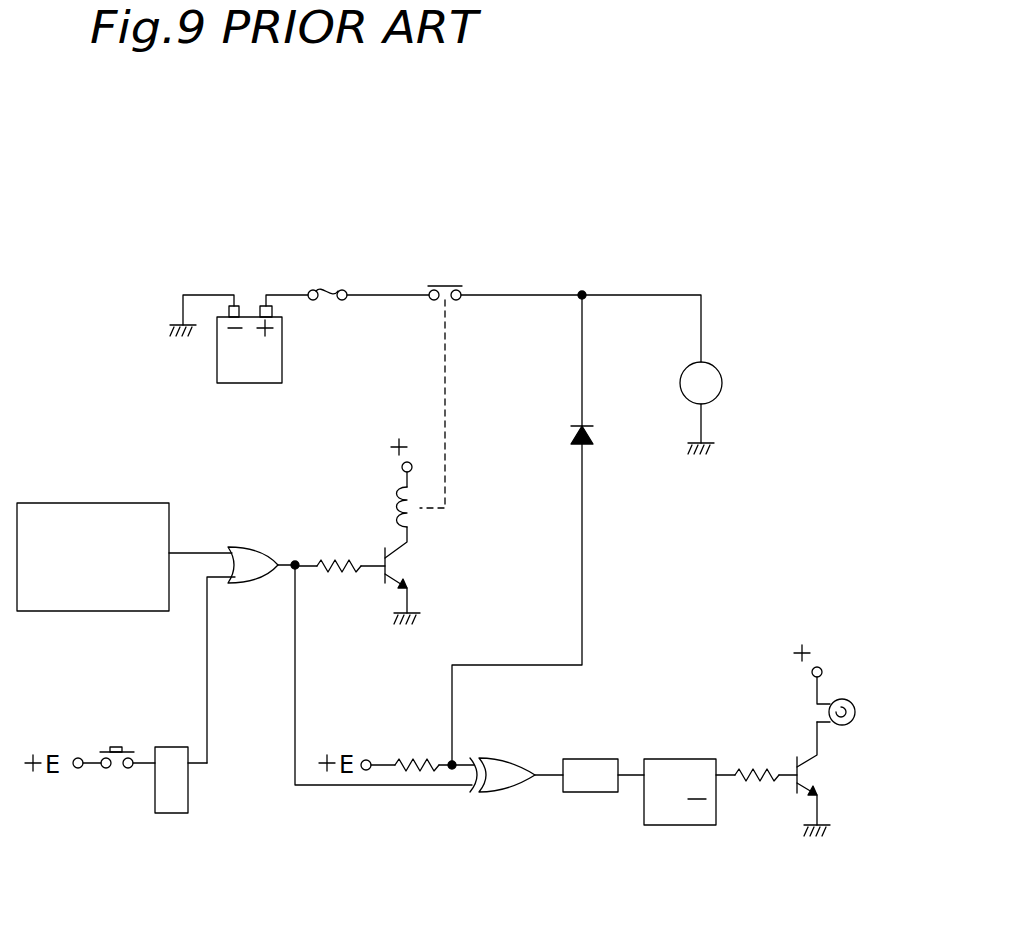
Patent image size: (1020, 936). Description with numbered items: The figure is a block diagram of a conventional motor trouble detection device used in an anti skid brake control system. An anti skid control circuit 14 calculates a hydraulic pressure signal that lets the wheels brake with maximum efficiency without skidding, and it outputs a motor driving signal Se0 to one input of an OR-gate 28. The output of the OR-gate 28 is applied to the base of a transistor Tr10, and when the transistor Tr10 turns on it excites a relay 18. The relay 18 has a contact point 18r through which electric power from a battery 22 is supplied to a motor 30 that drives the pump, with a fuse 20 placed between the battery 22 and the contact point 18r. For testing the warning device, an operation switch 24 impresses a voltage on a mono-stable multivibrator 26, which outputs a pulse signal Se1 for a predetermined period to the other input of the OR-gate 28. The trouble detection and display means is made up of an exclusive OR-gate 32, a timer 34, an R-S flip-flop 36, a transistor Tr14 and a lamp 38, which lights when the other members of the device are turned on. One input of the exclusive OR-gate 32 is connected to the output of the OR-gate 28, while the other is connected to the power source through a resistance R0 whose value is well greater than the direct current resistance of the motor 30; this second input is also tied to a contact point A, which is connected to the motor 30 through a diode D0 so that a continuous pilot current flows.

The anti skid control circuit 14 is at (56, 503).
The relay 18 is at (392, 515).
The contact point 18r is at (438, 284).
The fuse 20 is at (322, 290).
The battery 22 is at (282, 350).
The operation switch 24 is at (115, 772).
The mono-stable multivibrator 26 is at (189, 800).
The OR-gate 28 is at (262, 548).
The motor 30 is at (723, 383).
The exclusive OR-gate 32 is at (526, 758).
The timer 34 is at (587, 758).
The R-S flip-flop 36 is at (680, 758).
The lamp 38 is at (860, 701).
The diode D0 is at (575, 430).
The resistance R0 is at (417, 747).
The contact point A is at (456, 762).
The motor driving signal Se0 is at (193, 552).
The pulse signal Se1 is at (208, 687).
The transistor Tr10 is at (410, 554).
The transistor Tr14 is at (823, 773).